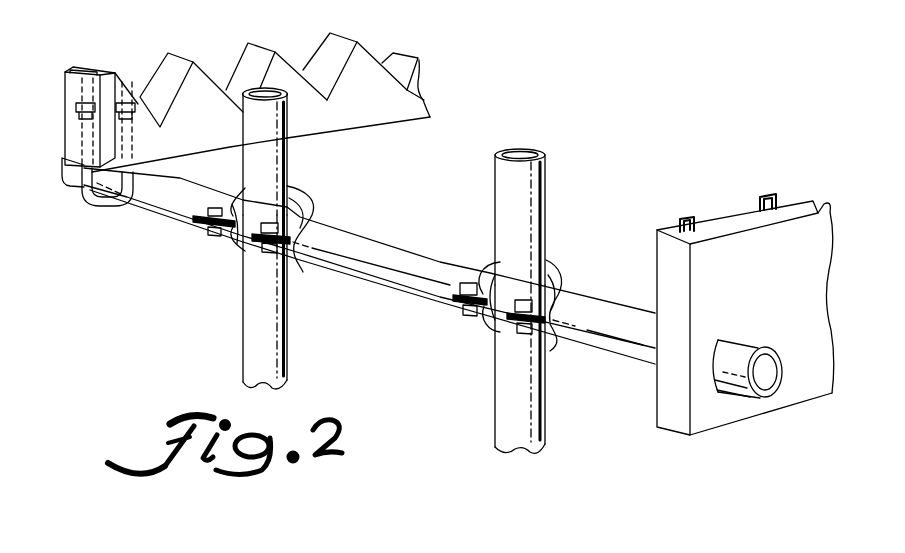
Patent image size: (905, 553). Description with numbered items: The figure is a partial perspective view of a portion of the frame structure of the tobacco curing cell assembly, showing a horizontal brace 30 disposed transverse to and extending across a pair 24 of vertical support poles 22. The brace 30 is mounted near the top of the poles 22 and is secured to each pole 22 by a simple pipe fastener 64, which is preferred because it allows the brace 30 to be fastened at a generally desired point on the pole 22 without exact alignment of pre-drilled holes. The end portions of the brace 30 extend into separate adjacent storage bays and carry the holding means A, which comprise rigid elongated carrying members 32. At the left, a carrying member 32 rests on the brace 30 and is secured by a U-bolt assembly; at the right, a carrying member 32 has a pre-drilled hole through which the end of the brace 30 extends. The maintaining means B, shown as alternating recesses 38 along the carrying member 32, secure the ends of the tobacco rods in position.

The vertical support poles 22 is at (287, 158).
The pairs of vertical support poles 24 is at (290, 318).
The horizontal brace 30 is at (363, 247).
The carrying member 32 is at (803, 356).
The alternating recesses 38 is at (325, 58).
The pipe fastener 64 is at (298, 205).
The holding means A is at (432, 100).
The maintaining means B is at (215, 46).